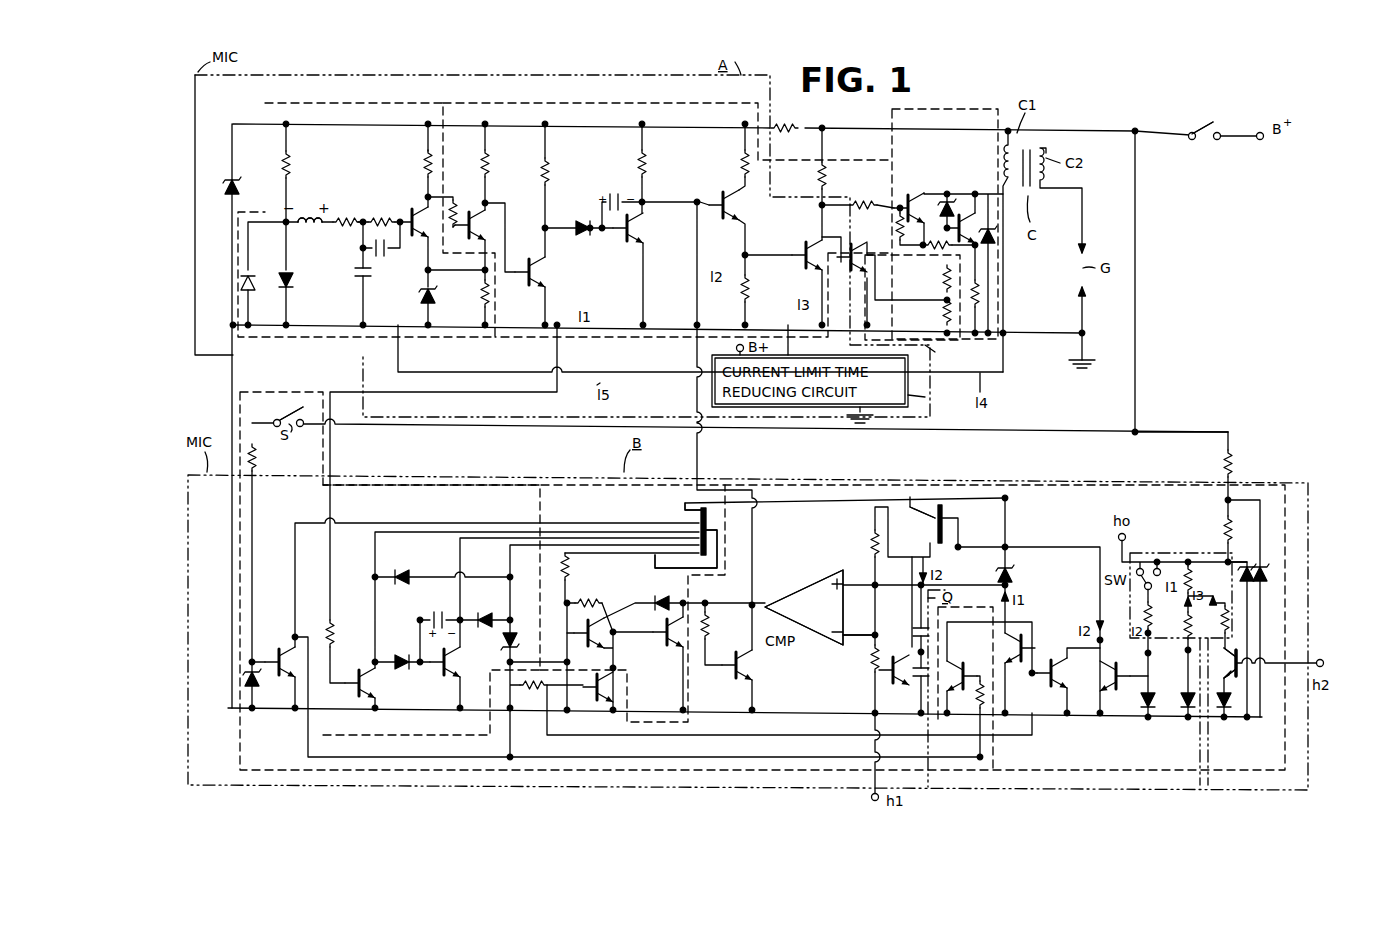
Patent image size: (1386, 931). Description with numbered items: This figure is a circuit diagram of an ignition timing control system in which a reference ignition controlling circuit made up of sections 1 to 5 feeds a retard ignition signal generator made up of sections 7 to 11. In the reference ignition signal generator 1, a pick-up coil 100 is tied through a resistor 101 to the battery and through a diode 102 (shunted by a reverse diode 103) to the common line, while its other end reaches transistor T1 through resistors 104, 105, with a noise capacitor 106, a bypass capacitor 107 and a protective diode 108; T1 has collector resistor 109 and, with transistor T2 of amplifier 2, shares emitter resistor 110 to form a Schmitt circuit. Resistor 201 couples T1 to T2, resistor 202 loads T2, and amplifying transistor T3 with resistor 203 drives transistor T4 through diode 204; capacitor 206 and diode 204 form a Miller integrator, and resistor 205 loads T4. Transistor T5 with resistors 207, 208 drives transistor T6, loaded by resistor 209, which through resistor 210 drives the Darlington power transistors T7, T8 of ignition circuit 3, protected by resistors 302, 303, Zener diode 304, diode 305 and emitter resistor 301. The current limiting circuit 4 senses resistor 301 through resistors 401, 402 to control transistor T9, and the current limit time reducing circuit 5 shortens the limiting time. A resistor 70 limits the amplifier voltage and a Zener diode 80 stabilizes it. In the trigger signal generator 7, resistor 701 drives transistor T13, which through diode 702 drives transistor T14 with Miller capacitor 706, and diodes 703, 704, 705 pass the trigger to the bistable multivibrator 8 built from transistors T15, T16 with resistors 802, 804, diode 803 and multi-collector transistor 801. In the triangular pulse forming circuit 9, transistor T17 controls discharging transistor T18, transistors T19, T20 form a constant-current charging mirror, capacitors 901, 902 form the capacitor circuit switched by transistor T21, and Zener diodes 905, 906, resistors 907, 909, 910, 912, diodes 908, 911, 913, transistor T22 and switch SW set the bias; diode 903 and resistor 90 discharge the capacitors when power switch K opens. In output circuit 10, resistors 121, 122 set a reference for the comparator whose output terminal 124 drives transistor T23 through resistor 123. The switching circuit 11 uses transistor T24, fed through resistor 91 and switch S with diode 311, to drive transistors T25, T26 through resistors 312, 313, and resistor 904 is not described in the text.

The reference ignition signal generator 1 is at (318, 102).
The signal amplifier 2 is at (510, 102).
The ignition circuit 3 is at (950, 109).
The current limiting circuit 4 is at (912, 309).
The current limit time reducing circuit 5 is at (824, 381).
The trigger signal generator 7 is at (405, 485).
The bistable multivibrator 8 is at (584, 484).
The triangular pulse forming circuit 9 is at (1042, 486).
The output circuit 10 is at (804, 486).
The switching circuit 11 is at (238, 755).
The resistor 70 is at (788, 126).
The Zener diode 80 is at (223, 171).
The external resistor 90 is at (1235, 462).
The external resistor 91 is at (258, 456).
The pick-up coil 100 is at (310, 222).
The resistor 101 is at (290, 160).
The diode 102 is at (290, 284).
The diode 103 is at (253, 266).
The resistor 104 is at (341, 214).
The resistor 105 is at (383, 214).
The capacitor 106 is at (352, 270).
The capacitor 107 is at (380, 258).
The diode 108 is at (432, 302).
The resistor 109 is at (424, 163).
The emitter resistor 110 is at (481, 287).
The resistor 121 is at (870, 538).
The resistor 122 is at (872, 634).
The resistor 123 is at (710, 626).
The output terminal 124 is at (762, 604).
The resistor 201 is at (453, 200).
The resistor 202 is at (500, 163).
The resistor 203 is at (549, 172).
The diode 204 is at (580, 236).
The resistor 205 is at (650, 156).
The capacitor 206 is at (612, 192).
The resistor 207 is at (740, 166).
The resistor 208 is at (748, 288).
The external resistor 209 is at (820, 178).
The resistor 210 is at (863, 200).
The resistor 301 is at (981, 295).
The resistor 302 is at (900, 242).
The resistor 303 is at (936, 248).
The Zener diode 304 is at (942, 197).
The diode 305 is at (991, 252).
The diode 311 is at (256, 693).
The resistor 312 is at (533, 700).
The resistor 313 is at (976, 722).
The resistor 401 is at (940, 279).
The resistor 402 is at (940, 317).
The resistor 701 is at (335, 628).
The diode 702 is at (402, 654).
The diode 703 is at (487, 612).
The diode 704 is at (398, 570).
The diode 705 is at (513, 632).
The capacitor 706 is at (436, 612).
The multi-collector transistor 801 is at (686, 515).
The resistor 802 is at (569, 557).
The diode 803 is at (668, 590).
The resistor 804 is at (582, 600).
The capacitor 901 is at (914, 624).
The capacitor 902 is at (872, 660).
The diode 903 is at (1012, 576).
The resistor 904 is at (1220, 526).
The Zener diode 905 is at (1260, 570).
The Zener diode 906 is at (1249, 570).
The resistor 907 is at (1140, 606).
The diode 908 is at (1150, 690).
The resistor 909 is at (1192, 580).
The resistor 910 is at (1186, 618).
The diode 911 is at (1184, 718).
The resistor 912 is at (1231, 614).
The diode 913 is at (1228, 718).
The transistor T1 is at (418, 222).
The transistor T2 is at (476, 225).
The amplifying transistor T3 is at (550, 273).
The transistor T4 is at (638, 228).
The transistor T5 is at (742, 207).
The transistor T6 is at (805, 248).
The power transistor T7 is at (916, 192).
The power transistor T8 is at (964, 208).
The transistor T9 is at (852, 272).
The transistor T13 is at (376, 689).
The transistor T14 is at (456, 662).
The transistor T15 is at (578, 633).
The transistor T16 is at (667, 647).
The transistor T17 is at (1063, 672).
The transistor T18 is at (1020, 634).
The multi-collector transistor T19 is at (932, 521).
The transistor T20 is at (1114, 688).
The transistor T21 is at (886, 682).
The transistor T22 is at (1245, 672).
The transistor T23 is at (754, 667).
The transistor T24 is at (286, 648).
The transistor T25 is at (618, 689).
The transistor T26 is at (958, 666).
The power switch K is at (1205, 125).
The switch S is at (289, 417).
The switch SW is at (1149, 579).